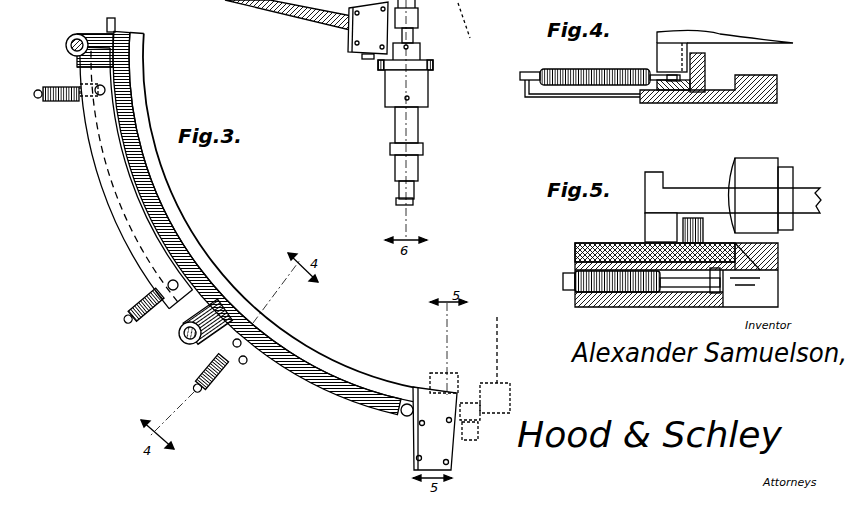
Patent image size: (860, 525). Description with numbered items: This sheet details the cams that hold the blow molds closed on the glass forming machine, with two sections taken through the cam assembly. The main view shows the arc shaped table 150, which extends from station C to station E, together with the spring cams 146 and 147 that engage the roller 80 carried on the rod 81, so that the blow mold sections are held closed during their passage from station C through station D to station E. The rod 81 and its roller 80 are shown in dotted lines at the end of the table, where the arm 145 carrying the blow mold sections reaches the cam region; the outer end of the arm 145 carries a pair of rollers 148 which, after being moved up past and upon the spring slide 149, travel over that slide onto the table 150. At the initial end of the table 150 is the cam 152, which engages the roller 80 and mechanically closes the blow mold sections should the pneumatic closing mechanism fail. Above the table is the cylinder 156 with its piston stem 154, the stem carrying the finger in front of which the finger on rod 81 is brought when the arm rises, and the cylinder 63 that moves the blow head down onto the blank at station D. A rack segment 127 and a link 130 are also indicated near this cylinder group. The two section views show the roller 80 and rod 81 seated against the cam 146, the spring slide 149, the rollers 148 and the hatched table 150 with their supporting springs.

In FIG. 3, the arc shaped table 150 is at (210, 268).
In FIG. 4, the arc shaped table 150 is at (772, 75).
In FIG. 5, the arc shaped table 150 is at (770, 267).
In FIG. 3, the spring cam 146 is at (273, 0).
In FIG. 4, the spring cam 146 is at (705, 62).
In FIG. 3, the spring cam 147 is at (153, 232).
In FIG. 3, the rack segment 127 is at (303, 8).
In FIG. 3, the cam 152 is at (370, 33).
In FIG. 5, the cam 152 is at (705, 232).
In FIG. 3, the spring slide 149 is at (342, 17).
In FIG. 5, the spring slide 149 is at (760, 270).
In FIG. 3, the rod 81 is at (418, 13).
In FIG. 4, the rod 81 is at (710, 34).
In FIG. 5, the rod 81 is at (658, 172).
In FIG. 3, the roller 80 is at (419, 26).
In FIG. 4, the roller 80 is at (657, 52).
In FIG. 5, the roller 80 is at (645, 228).
In FIG. 3, the link 130 is at (476, 20).
In FIG. 3, the rollers 148 is at (513, 397).
In FIG. 5, the rollers 148 is at (767, 149).
In FIG. 3, the piston stem 154 is at (413, 33).
In FIG. 3, the cylinder 156 is at (390, 88).
In FIG. 3, the cylinder 63 is at (427, 158).
In FIG. 3, the arm 145 is at (497, 337).